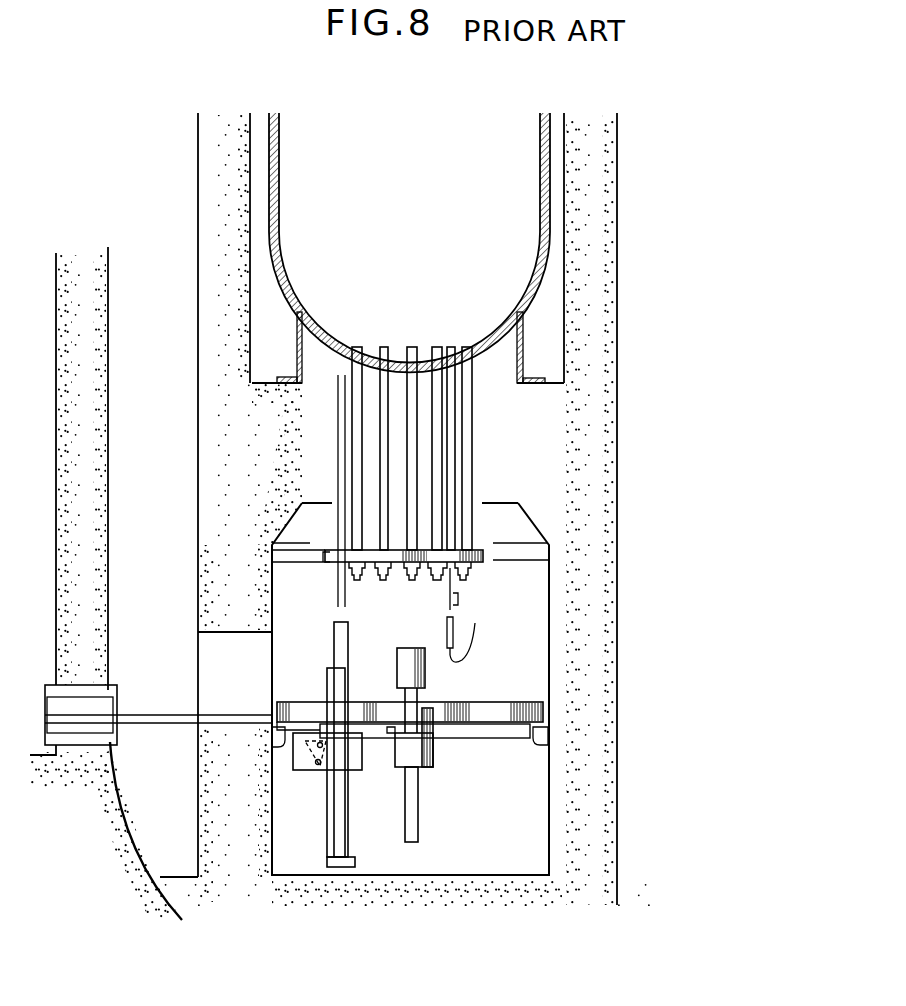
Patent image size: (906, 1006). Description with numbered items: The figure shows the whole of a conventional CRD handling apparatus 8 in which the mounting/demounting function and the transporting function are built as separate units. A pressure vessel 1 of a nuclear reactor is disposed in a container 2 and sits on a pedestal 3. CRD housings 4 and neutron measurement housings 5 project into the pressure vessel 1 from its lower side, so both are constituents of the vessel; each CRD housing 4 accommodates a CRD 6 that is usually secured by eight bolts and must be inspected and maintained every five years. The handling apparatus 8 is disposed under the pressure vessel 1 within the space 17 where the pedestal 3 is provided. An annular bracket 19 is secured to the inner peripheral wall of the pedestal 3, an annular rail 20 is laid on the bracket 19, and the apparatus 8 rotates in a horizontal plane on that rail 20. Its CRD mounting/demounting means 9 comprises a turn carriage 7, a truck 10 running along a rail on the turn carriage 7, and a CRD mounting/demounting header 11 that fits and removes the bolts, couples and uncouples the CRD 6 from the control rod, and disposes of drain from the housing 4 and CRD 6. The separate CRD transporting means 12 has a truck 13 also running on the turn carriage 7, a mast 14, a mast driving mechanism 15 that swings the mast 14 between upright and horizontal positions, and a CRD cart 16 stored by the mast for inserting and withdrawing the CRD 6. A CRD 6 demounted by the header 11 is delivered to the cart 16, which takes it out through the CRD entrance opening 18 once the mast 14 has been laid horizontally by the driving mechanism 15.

The pressure vessel 1 is at (547, 203).
The container 2 is at (108, 467).
The pedestal 3 is at (617, 505).
The CRD housings 4 is at (472, 407).
The neutron measurement housings 5 is at (453, 445).
The CRD 6 is at (386, 576).
The turn carriage 7 is at (537, 702).
The CRD handling apparatus 8 is at (427, 693).
The CRD mounting/demounting means 9 is at (433, 765).
The truck 10 is at (433, 750).
The CRD mounting/demounting header 11 is at (405, 648).
The CRD transporting means 12 is at (363, 760).
The truck 13 is at (318, 765).
The mast 14 is at (330, 690).
The mast driving mechanism 15 is at (313, 757).
The CRD cart 16 is at (336, 635).
The space 17 is at (527, 812).
The CRD entrance opening 18 is at (213, 650).
The annular bracket 19 is at (540, 742).
The annular rail 20 is at (547, 723).